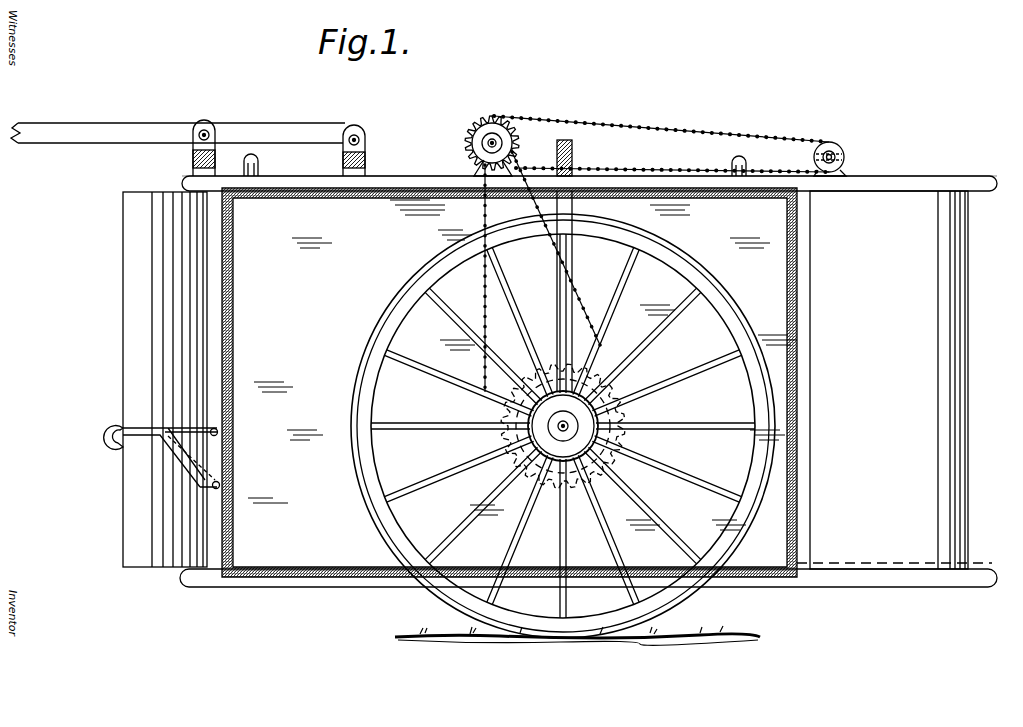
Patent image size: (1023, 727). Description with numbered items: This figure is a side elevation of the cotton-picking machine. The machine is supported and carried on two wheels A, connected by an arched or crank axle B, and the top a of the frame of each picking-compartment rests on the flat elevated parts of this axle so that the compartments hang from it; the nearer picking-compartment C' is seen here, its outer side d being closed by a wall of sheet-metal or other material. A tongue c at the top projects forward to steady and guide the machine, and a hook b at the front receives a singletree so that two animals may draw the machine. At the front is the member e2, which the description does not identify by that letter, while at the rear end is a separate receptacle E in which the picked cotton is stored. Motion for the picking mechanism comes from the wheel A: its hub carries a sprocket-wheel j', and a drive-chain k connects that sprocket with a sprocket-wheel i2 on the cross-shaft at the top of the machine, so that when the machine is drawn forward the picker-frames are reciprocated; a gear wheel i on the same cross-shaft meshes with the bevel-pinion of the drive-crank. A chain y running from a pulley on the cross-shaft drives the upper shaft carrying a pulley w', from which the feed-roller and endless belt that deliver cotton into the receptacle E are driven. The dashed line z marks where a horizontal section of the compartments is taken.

The tongue c is at (93, 137).
The top of the compartment frame a is at (308, 182).
The picking-compartment C' is at (589, 167).
The wheel i is at (481, 118).
The sprocket-wheel i2 is at (481, 141).
The crank-axle B is at (574, 160).
The chain y is at (680, 136).
The pulley w' is at (841, 148).
The outer side of the picking-compartment d is at (509, 382).
The front compartment e2 is at (122, 270).
The hook b is at (105, 427).
The wheel A is at (362, 432).
The sprocket-wheel j' is at (560, 414).
The receptacle E is at (889, 380).
The drive-chain k is at (483, 210).
The section line z is at (902, 553).